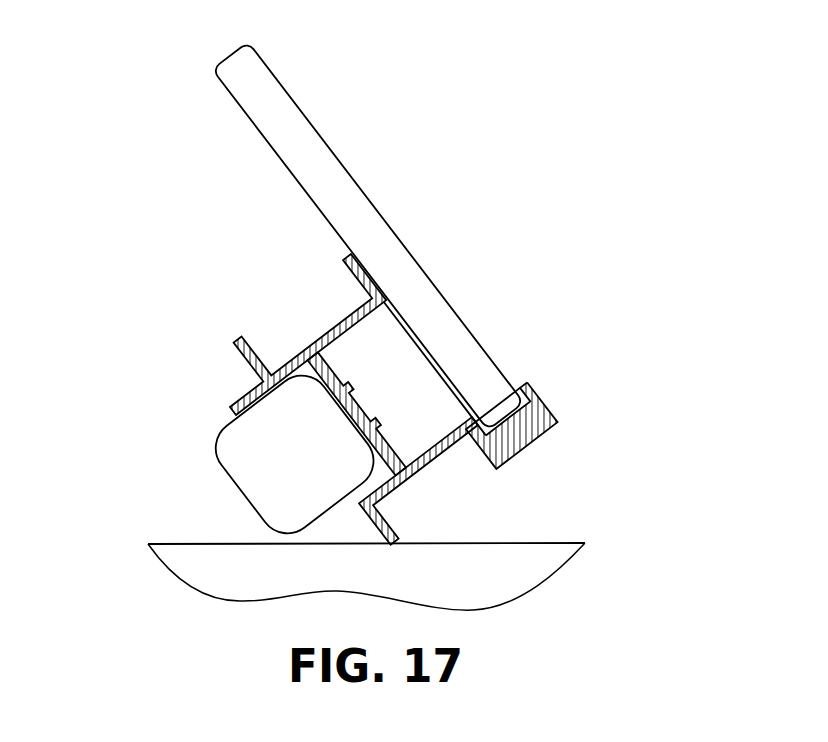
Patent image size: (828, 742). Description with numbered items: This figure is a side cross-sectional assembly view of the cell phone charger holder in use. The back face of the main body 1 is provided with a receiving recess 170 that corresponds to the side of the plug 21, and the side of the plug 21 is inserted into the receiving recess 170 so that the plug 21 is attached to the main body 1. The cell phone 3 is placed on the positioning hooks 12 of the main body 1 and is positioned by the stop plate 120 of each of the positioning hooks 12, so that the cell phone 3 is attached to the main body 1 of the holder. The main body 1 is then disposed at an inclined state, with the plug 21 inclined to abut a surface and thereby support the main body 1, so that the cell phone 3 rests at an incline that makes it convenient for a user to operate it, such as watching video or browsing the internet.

The main body 1 is at (303, 312).
The cell phone 3 is at (373, 220).
The positioning hooks 12 is at (537, 437).
The stop plate 120 is at (528, 383).
The receiving recess 170 is at (300, 362).
The plug 21 is at (224, 456).